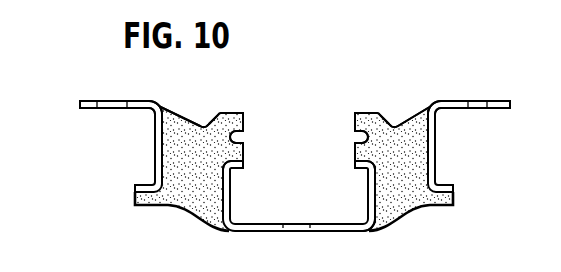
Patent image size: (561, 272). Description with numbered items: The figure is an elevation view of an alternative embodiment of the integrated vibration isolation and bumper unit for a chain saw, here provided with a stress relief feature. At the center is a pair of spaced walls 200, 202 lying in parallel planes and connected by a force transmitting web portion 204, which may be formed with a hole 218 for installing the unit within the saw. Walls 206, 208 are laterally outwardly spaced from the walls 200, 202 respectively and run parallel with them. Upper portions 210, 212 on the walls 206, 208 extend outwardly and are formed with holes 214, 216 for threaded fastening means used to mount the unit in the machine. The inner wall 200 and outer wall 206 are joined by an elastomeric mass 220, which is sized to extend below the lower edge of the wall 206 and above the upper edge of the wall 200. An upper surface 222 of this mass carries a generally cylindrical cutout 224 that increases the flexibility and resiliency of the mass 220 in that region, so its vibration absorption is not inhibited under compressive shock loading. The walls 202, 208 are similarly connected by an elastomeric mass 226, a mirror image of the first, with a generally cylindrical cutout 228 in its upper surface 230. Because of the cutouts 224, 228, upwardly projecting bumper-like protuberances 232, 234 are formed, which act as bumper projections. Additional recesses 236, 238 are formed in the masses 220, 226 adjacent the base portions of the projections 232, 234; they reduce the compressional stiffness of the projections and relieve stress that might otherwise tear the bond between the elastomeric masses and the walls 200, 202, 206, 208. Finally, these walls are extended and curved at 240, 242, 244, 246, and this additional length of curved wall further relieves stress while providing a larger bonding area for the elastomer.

The spaced wall 200 is at (233, 232).
The spaced wall 202 is at (372, 205).
The force transmitting web portion 204 is at (322, 223).
The wall 206 is at (157, 131).
The wall 208 is at (434, 132).
The upper portion 210 is at (82, 99).
The upper portion 212 is at (461, 103).
The hole 214 is at (113, 98).
The hole 216 is at (486, 102).
The hole 218 is at (294, 225).
The elastomeric mass 220 is at (190, 207).
The upper surface 222 is at (152, 99).
The cylindrical cutout 224 is at (205, 127).
The elastomeric mass 226 is at (411, 212).
The cylindrical cutout 228 is at (391, 127).
The upper surface 230 is at (440, 102).
The bumper-like protuberance 232 is at (237, 113).
The bumper-like protuberance 234 is at (361, 113).
The recess 236 is at (247, 132).
The recess 238 is at (351, 132).
The curved wall extension 240 is at (250, 162).
The curved wall extension 242 is at (352, 163).
The curved wall extension 244 is at (135, 187).
The curved wall extension 246 is at (454, 190).